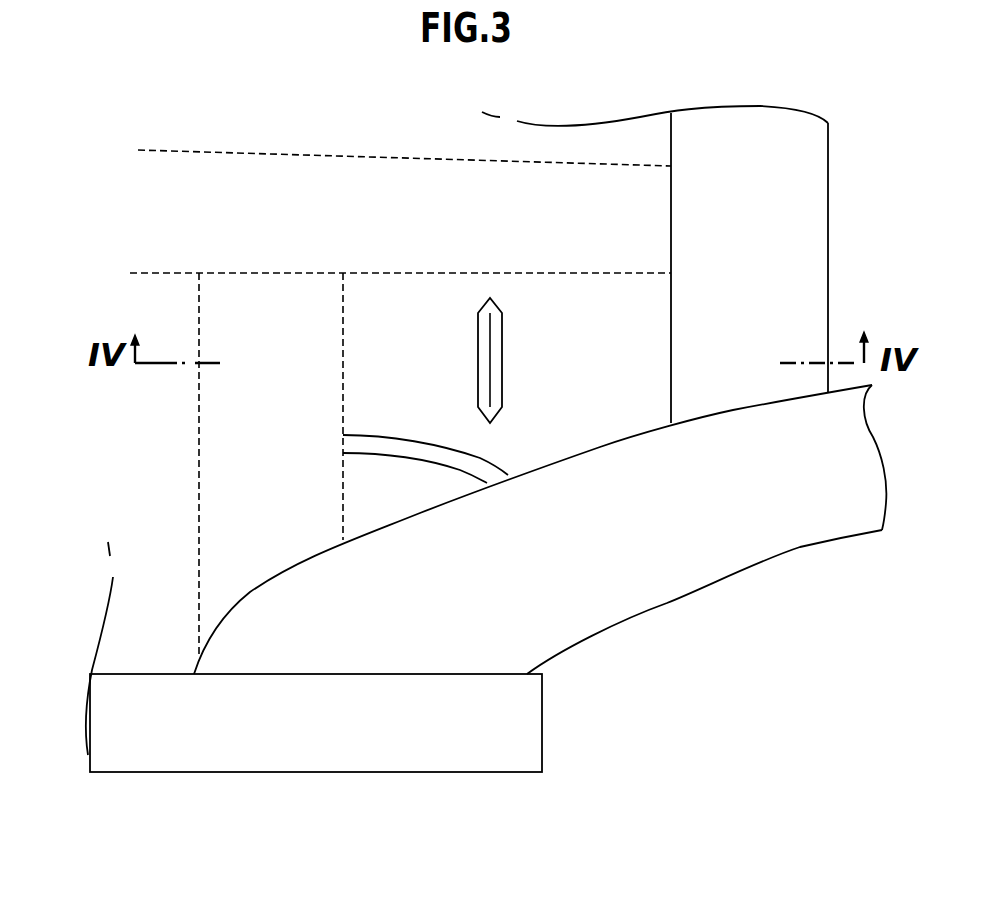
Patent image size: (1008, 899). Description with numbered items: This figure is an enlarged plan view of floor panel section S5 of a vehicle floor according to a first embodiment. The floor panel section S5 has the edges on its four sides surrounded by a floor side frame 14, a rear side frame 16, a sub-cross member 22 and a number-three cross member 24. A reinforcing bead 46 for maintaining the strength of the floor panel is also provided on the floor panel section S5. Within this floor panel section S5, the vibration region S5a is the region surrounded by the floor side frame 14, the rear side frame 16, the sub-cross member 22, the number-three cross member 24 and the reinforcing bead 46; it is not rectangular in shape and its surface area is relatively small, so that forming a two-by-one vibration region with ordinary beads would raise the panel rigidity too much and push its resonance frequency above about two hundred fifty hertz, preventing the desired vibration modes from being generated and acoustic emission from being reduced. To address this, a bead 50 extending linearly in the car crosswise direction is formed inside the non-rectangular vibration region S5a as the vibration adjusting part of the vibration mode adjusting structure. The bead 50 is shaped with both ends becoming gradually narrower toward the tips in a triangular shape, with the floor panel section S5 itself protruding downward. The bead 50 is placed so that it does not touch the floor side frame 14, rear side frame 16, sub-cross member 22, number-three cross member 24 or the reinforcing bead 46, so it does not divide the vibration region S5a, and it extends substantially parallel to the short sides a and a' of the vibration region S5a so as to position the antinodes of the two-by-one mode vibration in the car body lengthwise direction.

The floor side frame 14 is at (190, 150).
The rear side frame 16 is at (720, 577).
The sub-cross member 22 is at (199, 413).
The No. 3 cross member 24 is at (828, 222).
The reinforcing bead 46 is at (398, 458).
The bead 50 is at (508, 410).
The floor panel section S5 is at (368, 427).
The vibration region S5a is at (378, 328).
The short side a is at (189, 436).
The short side a' is at (782, 310).